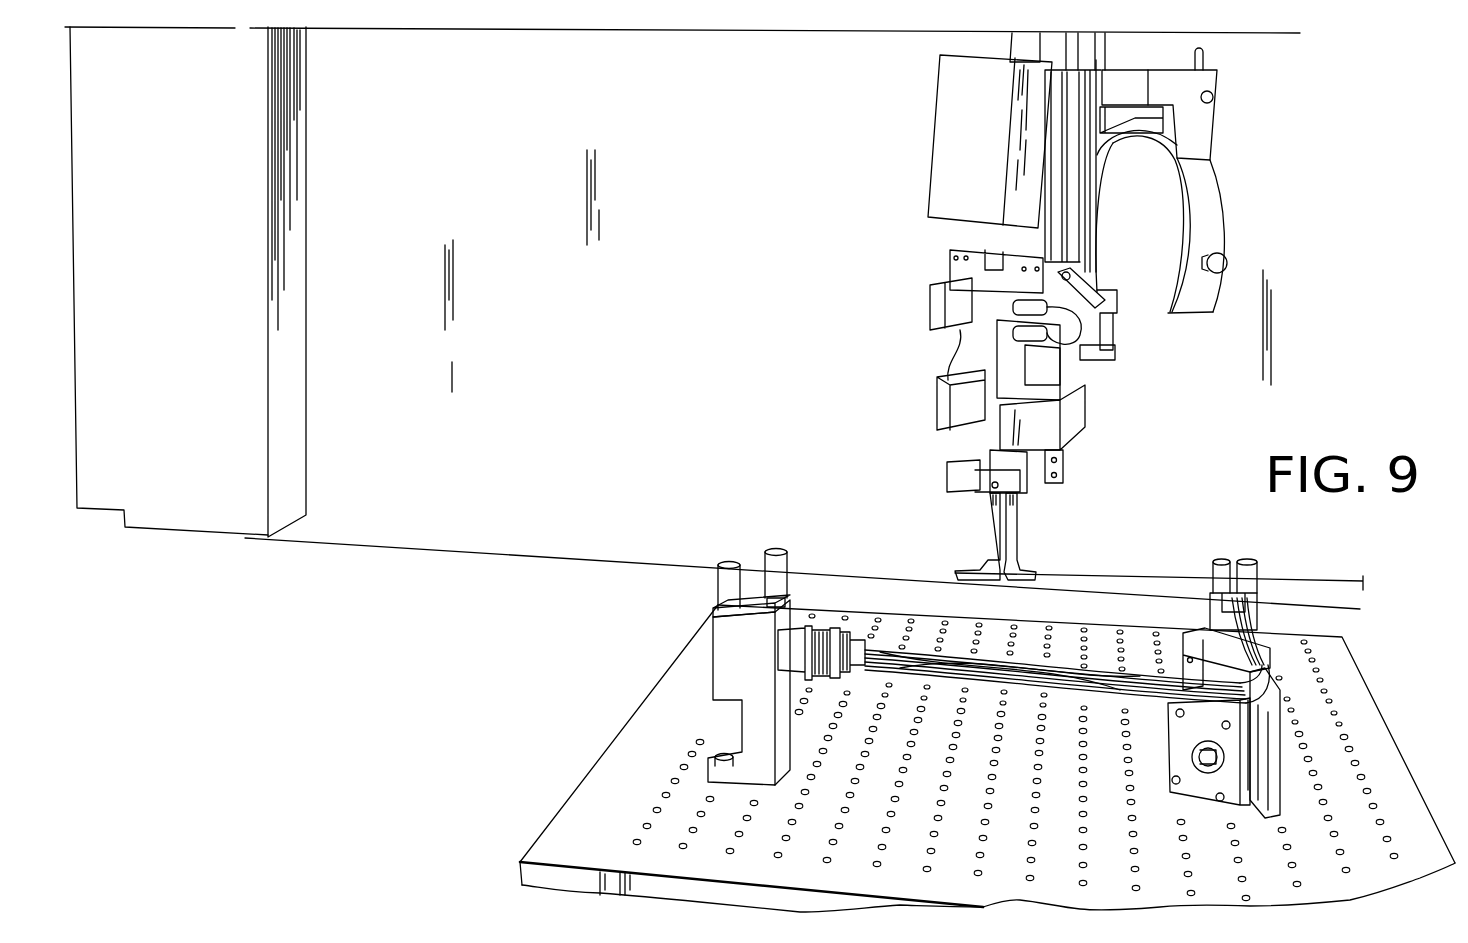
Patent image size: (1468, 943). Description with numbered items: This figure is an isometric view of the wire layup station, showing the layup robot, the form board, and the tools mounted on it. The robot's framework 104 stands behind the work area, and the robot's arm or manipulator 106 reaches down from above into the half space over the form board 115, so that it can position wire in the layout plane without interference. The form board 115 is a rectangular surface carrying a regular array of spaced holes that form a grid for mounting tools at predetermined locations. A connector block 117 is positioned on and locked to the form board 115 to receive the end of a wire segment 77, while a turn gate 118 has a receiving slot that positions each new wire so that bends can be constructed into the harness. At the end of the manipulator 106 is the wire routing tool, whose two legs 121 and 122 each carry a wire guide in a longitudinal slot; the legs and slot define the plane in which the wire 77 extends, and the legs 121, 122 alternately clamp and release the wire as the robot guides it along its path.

The framework 104 is at (188, 280).
The manipulator 106 is at (872, 149).
The form board 115 is at (620, 816).
The connector block 117 is at (715, 642).
The turn gate 118 is at (1268, 773).
The leg 121 is at (1015, 525).
The leg 122 is at (990, 527).
The wire segment 77 is at (1098, 680).